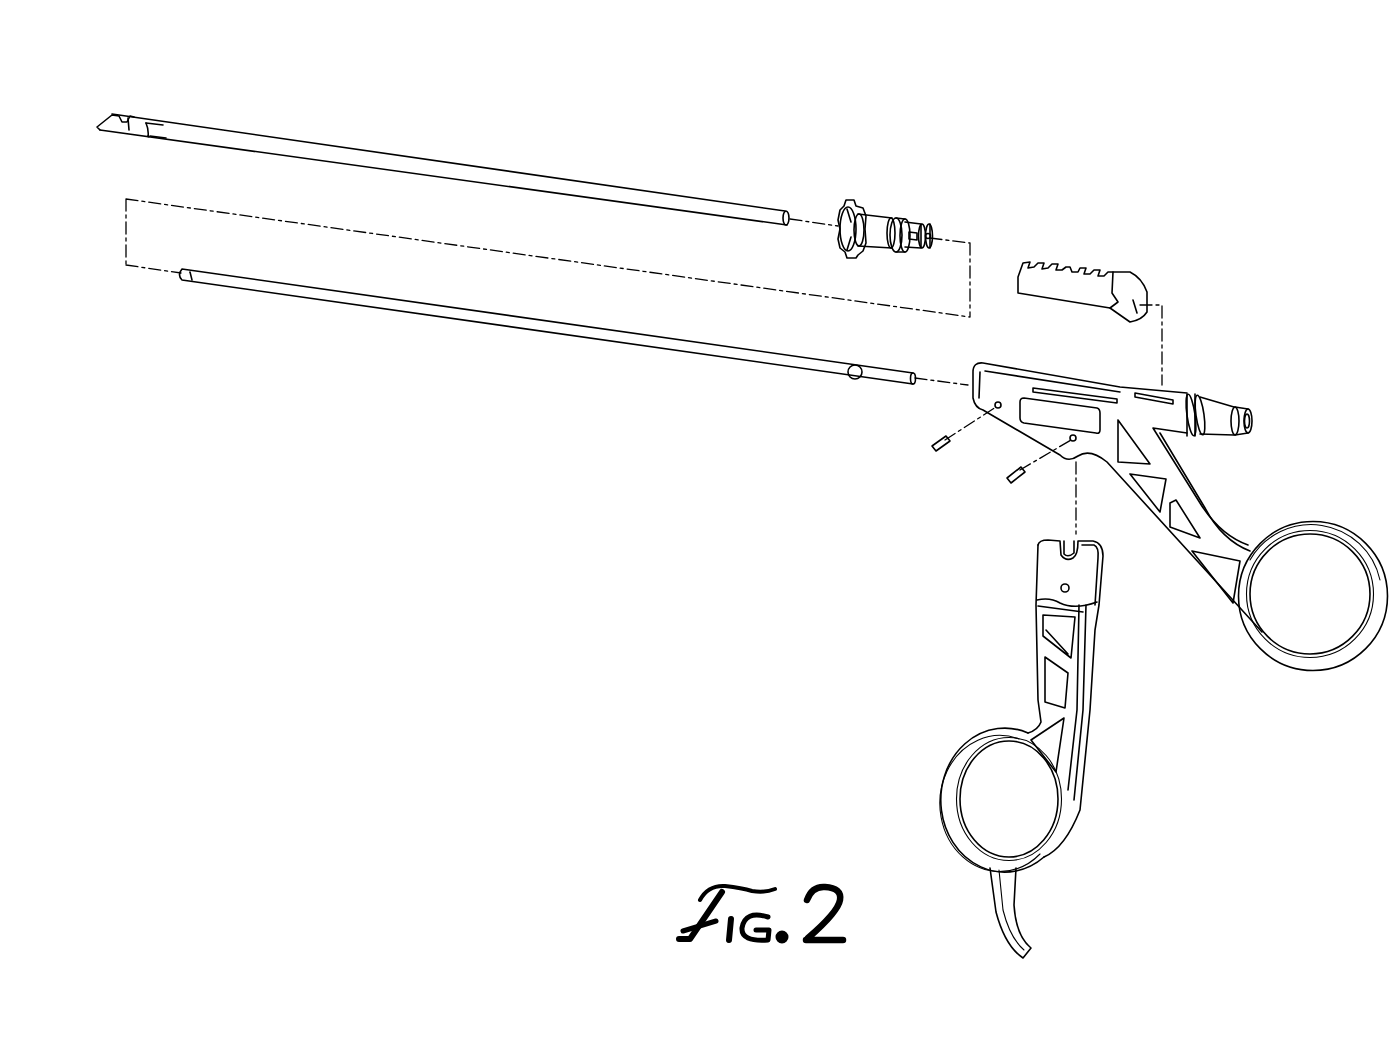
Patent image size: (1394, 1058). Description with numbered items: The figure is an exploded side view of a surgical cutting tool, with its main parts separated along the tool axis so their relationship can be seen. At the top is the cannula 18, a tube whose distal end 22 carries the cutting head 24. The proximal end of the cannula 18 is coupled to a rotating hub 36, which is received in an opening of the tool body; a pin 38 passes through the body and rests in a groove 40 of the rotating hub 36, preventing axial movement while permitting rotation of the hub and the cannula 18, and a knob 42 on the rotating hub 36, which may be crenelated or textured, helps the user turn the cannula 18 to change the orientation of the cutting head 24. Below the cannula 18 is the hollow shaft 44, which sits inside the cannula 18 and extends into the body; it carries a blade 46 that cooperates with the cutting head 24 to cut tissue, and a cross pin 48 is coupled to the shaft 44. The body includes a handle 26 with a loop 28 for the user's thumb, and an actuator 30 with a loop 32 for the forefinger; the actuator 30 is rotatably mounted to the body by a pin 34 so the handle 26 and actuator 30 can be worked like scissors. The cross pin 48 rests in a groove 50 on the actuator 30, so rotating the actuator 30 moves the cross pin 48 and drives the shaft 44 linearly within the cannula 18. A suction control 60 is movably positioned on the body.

The cannula 18 is at (483, 175).
The distal end of the cannula 22 is at (163, 130).
The cutting head 24 is at (105, 118).
The handle 26 is at (1193, 508).
The handle loop 28 is at (1332, 533).
The actuator 30 is at (1073, 668).
The actuator loop 32 is at (950, 800).
The pin 34 is at (1007, 477).
The rotating hub 36 is at (925, 222).
The pin 38 is at (932, 443).
The groove 40 is at (893, 215).
The knob 42 is at (848, 205).
The hollow shaft 44 is at (487, 320).
The blade 46 is at (192, 276).
The cross pin 48 is at (850, 380).
The groove 50 is at (1055, 560).
The suction control 60 is at (1072, 262).